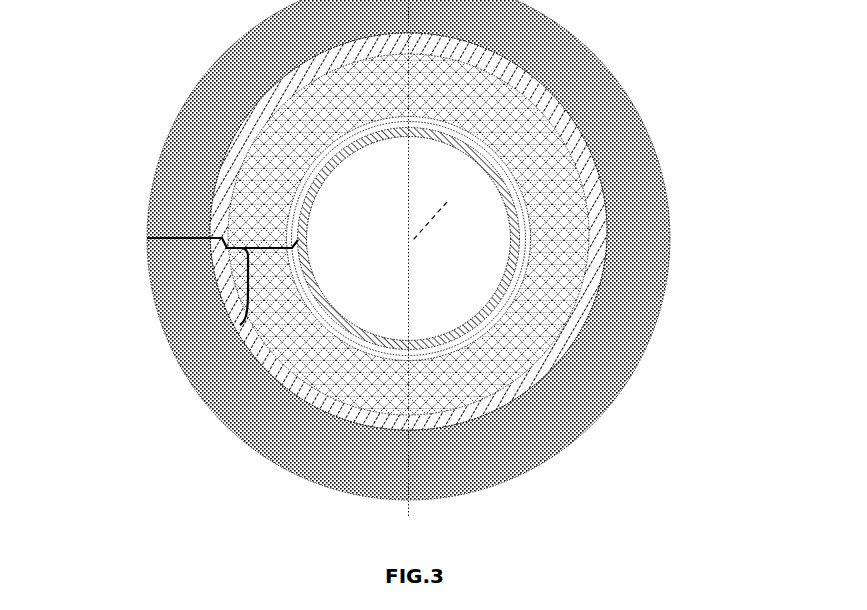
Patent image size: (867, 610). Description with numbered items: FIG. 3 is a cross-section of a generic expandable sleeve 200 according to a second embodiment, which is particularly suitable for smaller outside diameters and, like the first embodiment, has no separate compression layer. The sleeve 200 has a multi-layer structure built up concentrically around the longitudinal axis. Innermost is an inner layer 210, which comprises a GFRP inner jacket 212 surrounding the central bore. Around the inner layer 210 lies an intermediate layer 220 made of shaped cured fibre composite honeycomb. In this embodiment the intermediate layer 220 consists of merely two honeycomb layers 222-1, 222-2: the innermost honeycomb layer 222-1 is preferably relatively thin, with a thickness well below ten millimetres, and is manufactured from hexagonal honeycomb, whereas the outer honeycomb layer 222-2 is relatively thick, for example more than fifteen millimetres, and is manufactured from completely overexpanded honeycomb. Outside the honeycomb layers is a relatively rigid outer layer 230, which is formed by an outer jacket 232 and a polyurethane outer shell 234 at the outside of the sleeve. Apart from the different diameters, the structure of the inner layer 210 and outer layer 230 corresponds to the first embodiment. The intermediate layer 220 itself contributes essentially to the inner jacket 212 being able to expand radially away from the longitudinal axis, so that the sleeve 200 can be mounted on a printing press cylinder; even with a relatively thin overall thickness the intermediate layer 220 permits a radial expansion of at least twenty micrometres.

The sleeve 200 is at (151, 85).
The inner layer 210 is at (294, 248).
The GFRP inner jacket 212 is at (311, 292).
The intermediate layer 220 is at (240, 325).
The innermost honeycomb layer 222-1 is at (533, 248).
The outer honeycomb layer 222-2 is at (542, 333).
The outer layer 230 is at (178, 238).
The outer jacket 232 is at (557, 105).
The polyurethane outer shell 234 is at (623, 167).